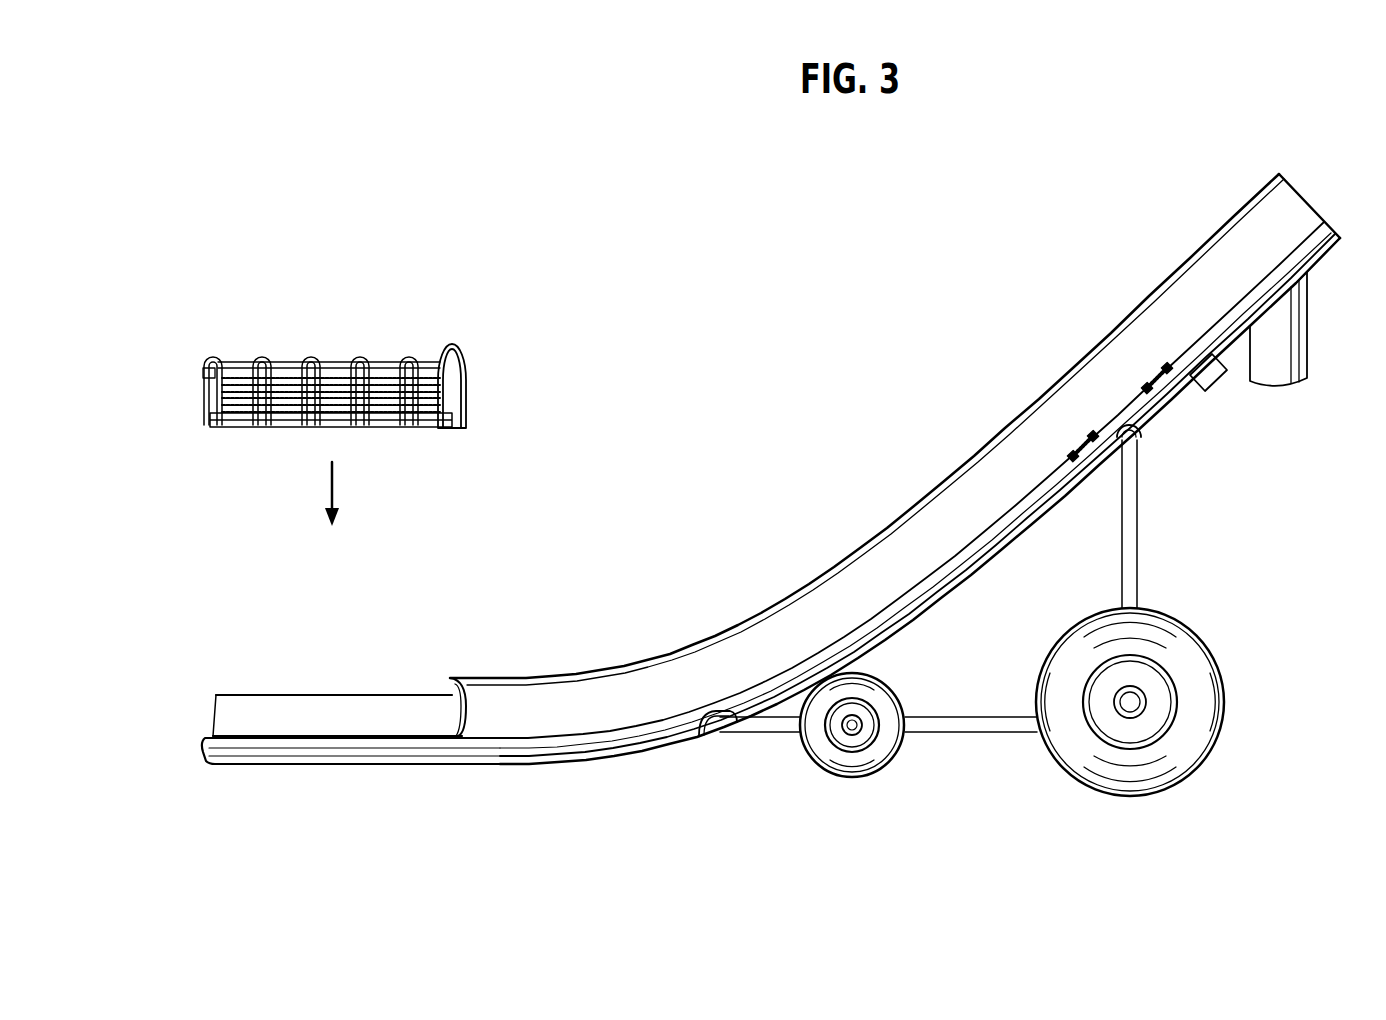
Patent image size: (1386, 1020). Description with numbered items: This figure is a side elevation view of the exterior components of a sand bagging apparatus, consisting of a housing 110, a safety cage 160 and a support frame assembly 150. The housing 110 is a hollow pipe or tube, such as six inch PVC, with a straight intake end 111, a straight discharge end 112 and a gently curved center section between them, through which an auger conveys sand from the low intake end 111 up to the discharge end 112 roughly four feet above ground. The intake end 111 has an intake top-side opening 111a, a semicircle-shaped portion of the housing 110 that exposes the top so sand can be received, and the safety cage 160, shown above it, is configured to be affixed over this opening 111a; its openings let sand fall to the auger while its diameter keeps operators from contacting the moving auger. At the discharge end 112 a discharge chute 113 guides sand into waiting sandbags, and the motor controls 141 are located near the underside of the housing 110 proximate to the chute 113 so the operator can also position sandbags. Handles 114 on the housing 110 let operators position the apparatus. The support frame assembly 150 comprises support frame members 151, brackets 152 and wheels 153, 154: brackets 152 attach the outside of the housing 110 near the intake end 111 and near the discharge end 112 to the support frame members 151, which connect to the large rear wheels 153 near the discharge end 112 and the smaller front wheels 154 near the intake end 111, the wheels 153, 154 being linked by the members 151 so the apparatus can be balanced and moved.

The housing 110 is at (1018, 402).
The intake end 111 is at (212, 646).
The intake top-side opening 111a is at (344, 712).
The discharge end 112 is at (1244, 186).
The discharge chute 113 is at (1282, 400).
The handles 114 is at (1152, 367).
The controls 141 is at (1217, 396).
The support frame assembly 150 is at (928, 655).
The support frame members 151 is at (1116, 584).
The brackets 152 is at (1145, 432).
The rear wheels 153 is at (1160, 800).
The front wheels 154 is at (790, 766).
The safety cage 160 is at (364, 350).